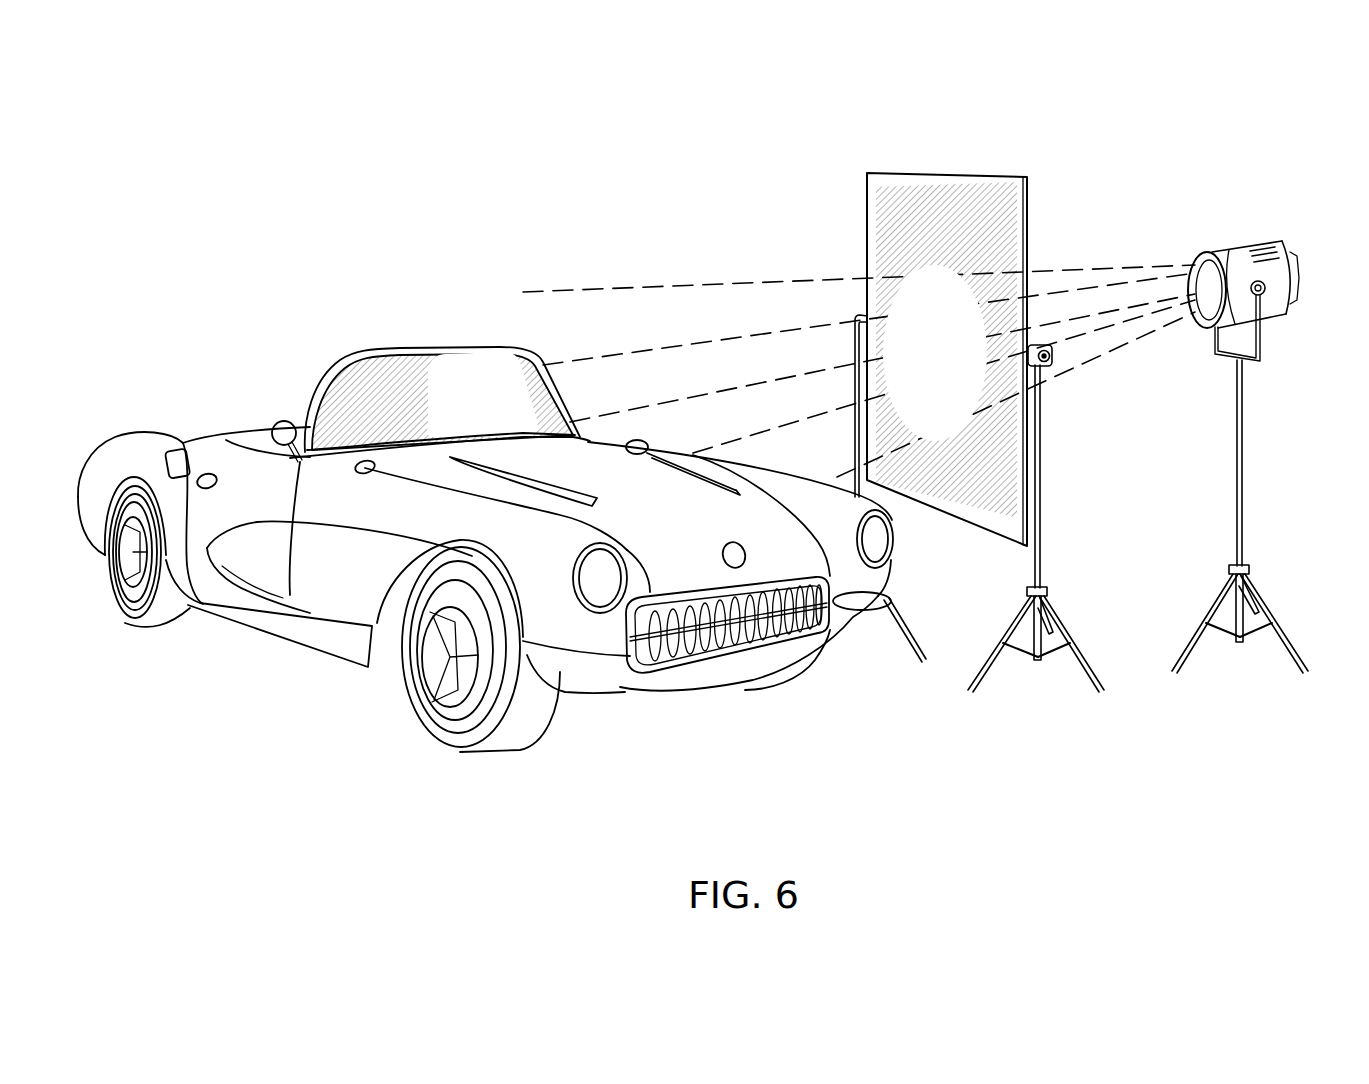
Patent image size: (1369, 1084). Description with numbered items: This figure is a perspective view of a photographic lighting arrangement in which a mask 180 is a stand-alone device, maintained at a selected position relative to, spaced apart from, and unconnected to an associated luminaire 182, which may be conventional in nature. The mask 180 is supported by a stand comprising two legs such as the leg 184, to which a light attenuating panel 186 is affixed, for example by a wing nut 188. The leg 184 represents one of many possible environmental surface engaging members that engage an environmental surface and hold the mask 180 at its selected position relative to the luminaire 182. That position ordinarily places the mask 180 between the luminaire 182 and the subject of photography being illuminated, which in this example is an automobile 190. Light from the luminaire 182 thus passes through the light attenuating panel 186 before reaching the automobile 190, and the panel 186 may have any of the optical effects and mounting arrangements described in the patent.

The mask 180 is at (990, 165).
The luminaire 182 is at (1266, 226).
The leg 184 is at (1037, 513).
The light attenuating panel 186 is at (858, 162).
The wing nut 188 is at (1062, 368).
The automobile 190 is at (297, 641).